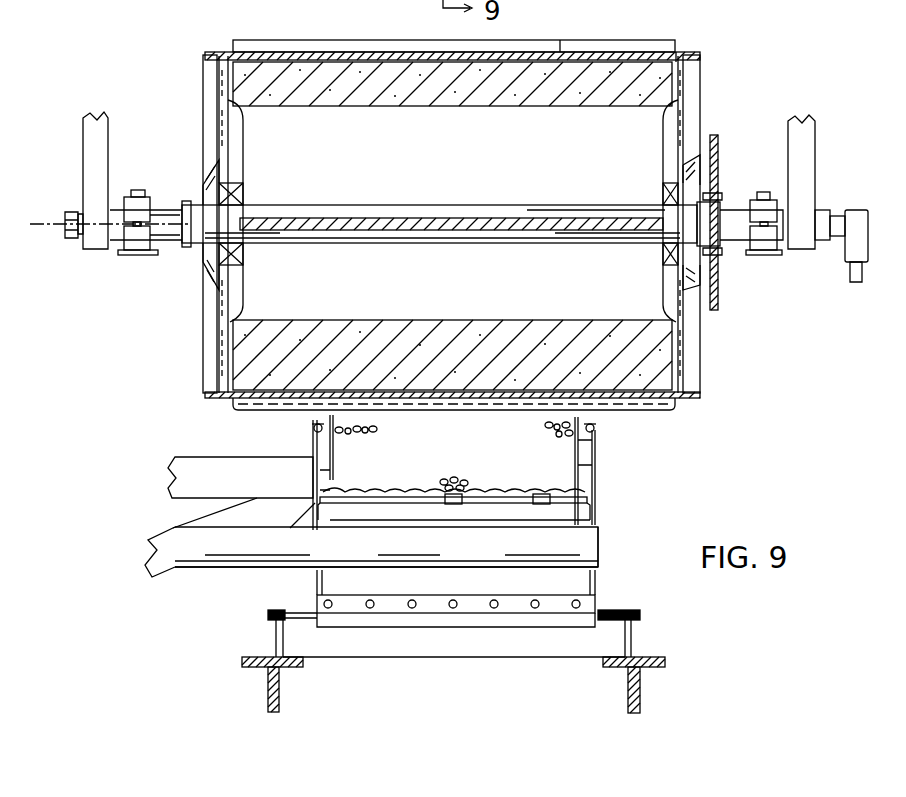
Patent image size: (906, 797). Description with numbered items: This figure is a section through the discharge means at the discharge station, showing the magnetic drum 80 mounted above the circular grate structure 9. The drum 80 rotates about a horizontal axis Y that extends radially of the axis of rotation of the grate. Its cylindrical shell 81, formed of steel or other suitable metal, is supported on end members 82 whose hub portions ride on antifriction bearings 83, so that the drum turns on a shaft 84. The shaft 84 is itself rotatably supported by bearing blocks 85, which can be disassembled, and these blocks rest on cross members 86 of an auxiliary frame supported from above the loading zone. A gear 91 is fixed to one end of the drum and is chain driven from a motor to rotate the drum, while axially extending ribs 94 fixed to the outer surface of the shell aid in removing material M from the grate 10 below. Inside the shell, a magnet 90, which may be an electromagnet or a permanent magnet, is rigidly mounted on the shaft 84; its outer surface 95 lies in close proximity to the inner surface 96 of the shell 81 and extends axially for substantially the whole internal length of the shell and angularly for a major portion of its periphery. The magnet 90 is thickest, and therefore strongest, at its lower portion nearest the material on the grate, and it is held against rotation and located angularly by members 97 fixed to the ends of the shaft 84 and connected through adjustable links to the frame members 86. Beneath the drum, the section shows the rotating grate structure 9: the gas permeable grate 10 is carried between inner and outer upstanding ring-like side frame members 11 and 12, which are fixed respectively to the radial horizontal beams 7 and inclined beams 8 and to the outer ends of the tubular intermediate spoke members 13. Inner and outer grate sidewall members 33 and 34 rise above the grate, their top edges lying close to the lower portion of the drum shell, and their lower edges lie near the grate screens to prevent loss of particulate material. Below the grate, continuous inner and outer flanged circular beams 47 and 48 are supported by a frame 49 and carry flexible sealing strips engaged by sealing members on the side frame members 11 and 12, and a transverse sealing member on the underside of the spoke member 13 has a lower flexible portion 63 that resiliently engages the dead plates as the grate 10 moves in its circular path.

The horizontal beam 7 is at (190, 470).
The inclined beam 8 is at (178, 547).
The grate structure 9 is at (613, 495).
The gas permeable grate 10 is at (523, 494).
The inner side frame member 11 is at (313, 450).
The outer side frame member 12 is at (588, 456).
The intermediate auxiliary spoke-type frame member 13 is at (237, 562).
The inner grate sidewall member 33 is at (310, 425).
The outer grate sidewall member 34 is at (596, 425).
The inner flanged circular beam 47 is at (276, 636).
The outer flanged circular beam 48 is at (631, 638).
The frame 49 is at (280, 690).
The lower flexible portion 63 is at (430, 617).
The magnetic drum 80 is at (213, 41).
The cylindrical shell 81 is at (678, 56).
The end member 82 is at (212, 100).
The bearing 83 is at (222, 196).
The shaft 84 is at (468, 212).
The bearing block 85 is at (146, 210).
The cross member 86 is at (132, 256).
The magnet 90 is at (466, 322).
The gear 91 is at (718, 298).
The rib 94 is at (557, 45).
The outer surface 95 is at (306, 52).
The inner surface 96 is at (400, 60).
The member 97 is at (90, 165).
The material M is at (483, 490).
The horizontal axis Y is at (45, 230).